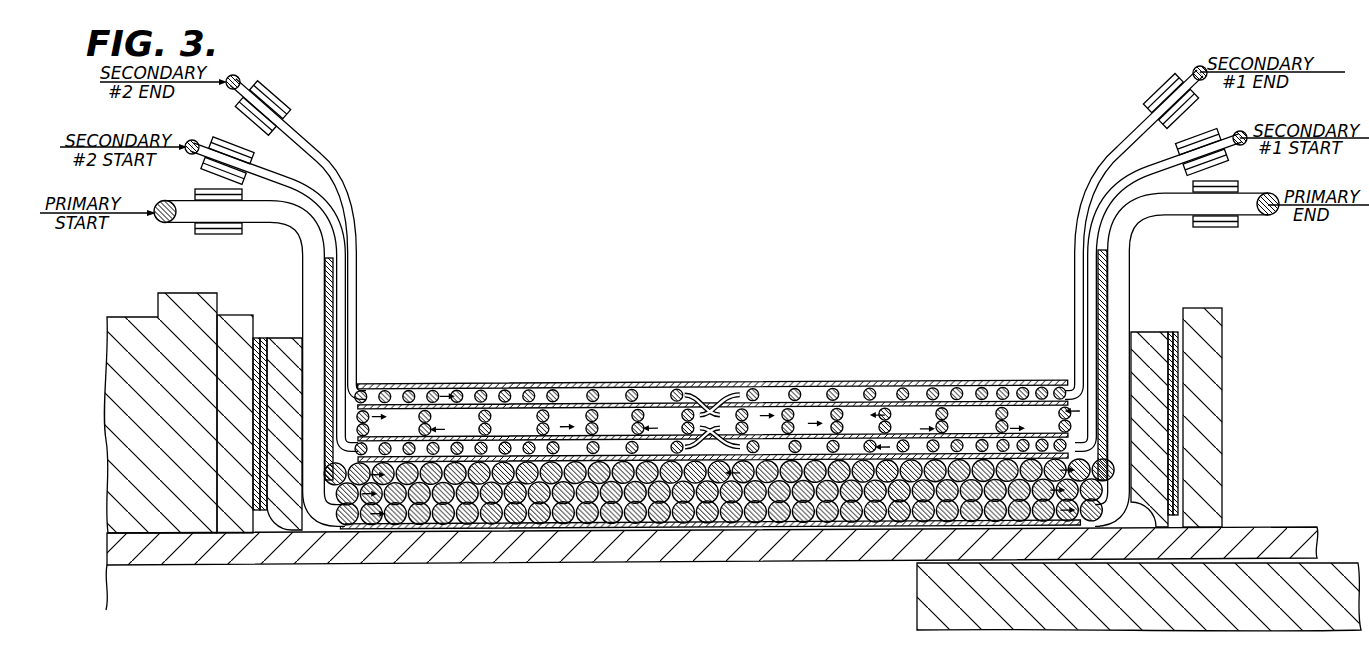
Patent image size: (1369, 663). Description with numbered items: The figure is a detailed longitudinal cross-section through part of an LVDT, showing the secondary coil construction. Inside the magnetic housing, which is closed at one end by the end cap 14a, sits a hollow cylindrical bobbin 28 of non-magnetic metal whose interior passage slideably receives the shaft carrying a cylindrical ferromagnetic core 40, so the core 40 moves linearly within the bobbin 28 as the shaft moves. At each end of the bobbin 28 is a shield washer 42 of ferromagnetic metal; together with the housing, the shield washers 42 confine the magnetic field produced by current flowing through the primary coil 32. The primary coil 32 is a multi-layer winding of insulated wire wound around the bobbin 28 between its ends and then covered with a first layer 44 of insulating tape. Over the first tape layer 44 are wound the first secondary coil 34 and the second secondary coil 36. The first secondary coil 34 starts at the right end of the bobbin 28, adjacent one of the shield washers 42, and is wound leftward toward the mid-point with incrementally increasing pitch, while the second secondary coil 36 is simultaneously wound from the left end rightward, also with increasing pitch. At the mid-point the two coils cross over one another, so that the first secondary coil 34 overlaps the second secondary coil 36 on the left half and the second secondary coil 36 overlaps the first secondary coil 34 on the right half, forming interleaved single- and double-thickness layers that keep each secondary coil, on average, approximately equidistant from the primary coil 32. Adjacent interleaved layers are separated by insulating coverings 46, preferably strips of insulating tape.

The end cap 14a is at (132, 317).
The shield washer 42 is at (242, 315).
The bobbin 28 is at (1256, 527).
The core 40 is at (1340, 563).
The primary coil 32 is at (552, 512).
The first secondary coil 34 is at (484, 425).
The second secondary coil 36 is at (565, 447).
The first layer of insulating tape 44 is at (990, 455).
The insulating coverings 46 is at (660, 440).